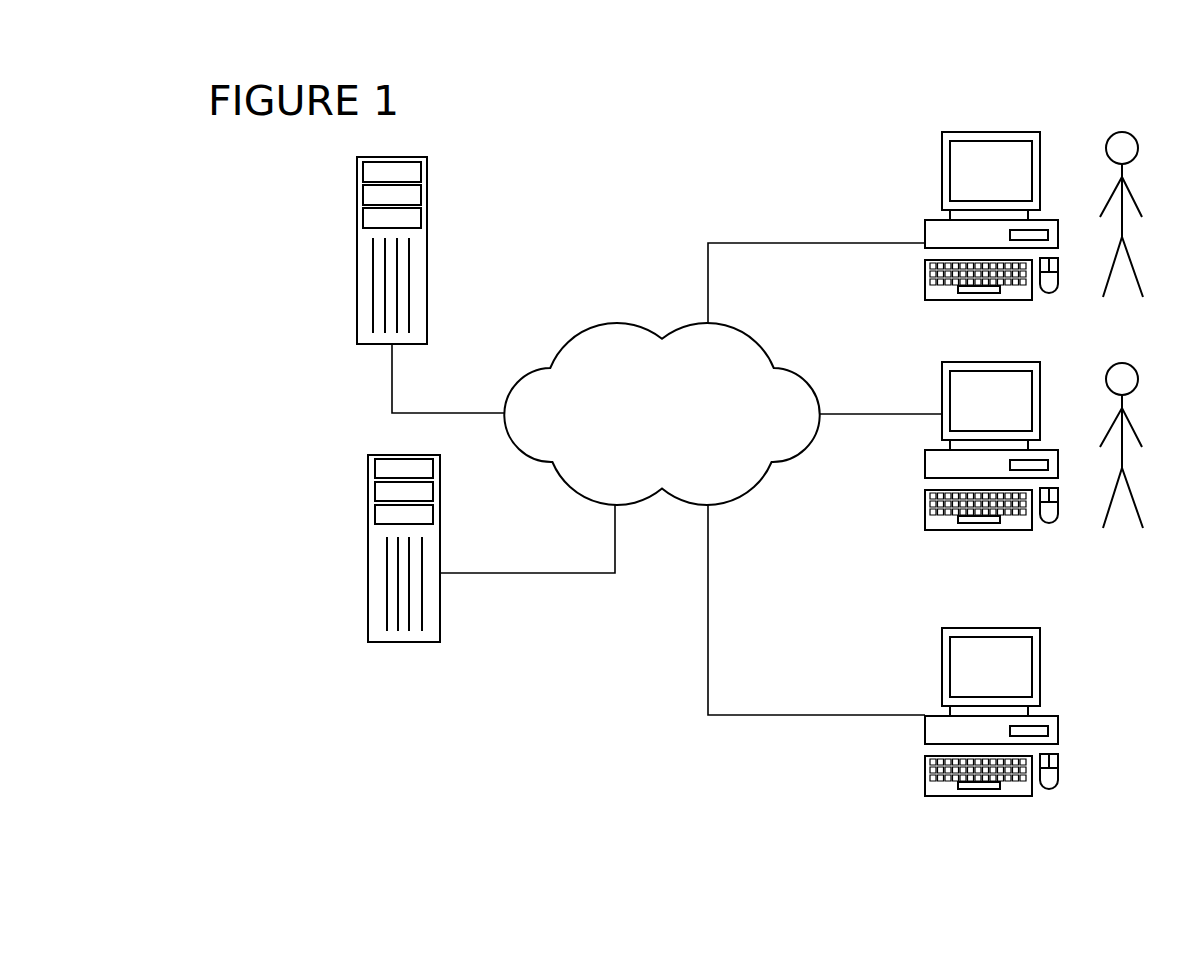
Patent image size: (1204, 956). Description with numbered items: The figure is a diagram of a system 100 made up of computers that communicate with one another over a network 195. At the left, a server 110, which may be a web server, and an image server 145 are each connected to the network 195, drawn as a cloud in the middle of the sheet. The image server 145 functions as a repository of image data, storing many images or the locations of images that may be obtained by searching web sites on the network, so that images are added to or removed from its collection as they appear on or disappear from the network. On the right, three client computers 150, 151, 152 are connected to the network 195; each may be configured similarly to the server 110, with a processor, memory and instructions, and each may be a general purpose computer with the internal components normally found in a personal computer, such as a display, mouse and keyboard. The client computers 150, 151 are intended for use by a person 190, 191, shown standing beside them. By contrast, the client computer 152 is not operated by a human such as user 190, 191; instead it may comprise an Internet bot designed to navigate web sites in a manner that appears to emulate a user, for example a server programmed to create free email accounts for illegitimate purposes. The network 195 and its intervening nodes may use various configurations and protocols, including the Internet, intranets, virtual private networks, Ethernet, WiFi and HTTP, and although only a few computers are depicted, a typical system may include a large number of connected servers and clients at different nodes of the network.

The system 100 is at (673, 68).
The server 110 is at (357, 243).
The image server 145 is at (368, 562).
The network 195 is at (613, 323).
The client computer 150 is at (942, 187).
The client computer 151 is at (942, 417).
The client computer 152 is at (942, 633).
The person 190 is at (1123, 217).
The person 191 is at (1123, 447).